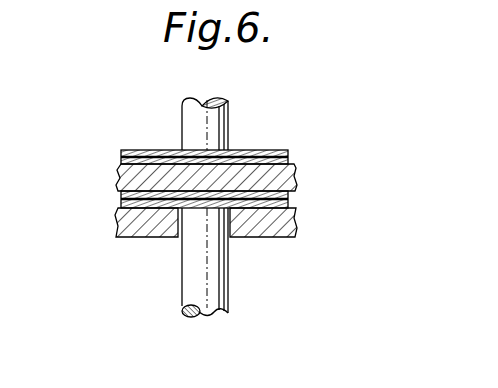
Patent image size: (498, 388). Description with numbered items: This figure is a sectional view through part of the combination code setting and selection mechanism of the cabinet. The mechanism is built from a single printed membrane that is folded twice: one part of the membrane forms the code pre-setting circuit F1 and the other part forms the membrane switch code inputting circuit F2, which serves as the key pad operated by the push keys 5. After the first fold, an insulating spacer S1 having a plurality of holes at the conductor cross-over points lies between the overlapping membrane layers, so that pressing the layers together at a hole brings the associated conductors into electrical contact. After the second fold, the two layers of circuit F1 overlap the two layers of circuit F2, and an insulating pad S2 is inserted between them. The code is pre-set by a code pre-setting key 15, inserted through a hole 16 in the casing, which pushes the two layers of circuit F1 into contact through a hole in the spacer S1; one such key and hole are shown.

The push key 5 is at (192, 118).
The code pre-setting key 15 is at (188, 271).
The hole 16 is at (238, 222).
The insulating spacer S1 is at (297, 155).
The insulating pad S2 is at (118, 178).
The code pre-setting circuit F1 is at (122, 159).
The code inputting circuit F2 is at (122, 197).